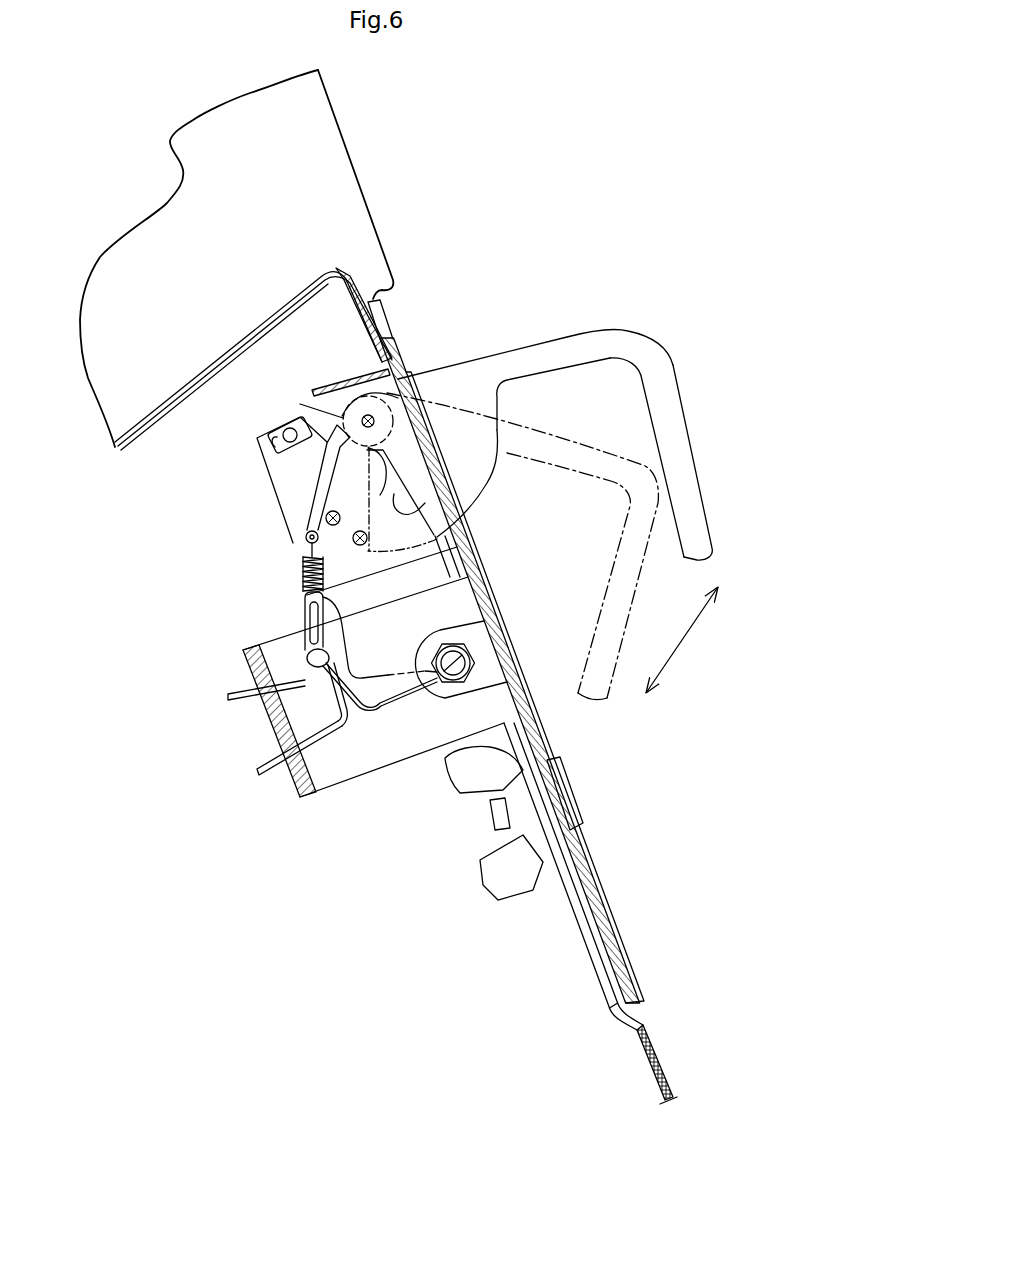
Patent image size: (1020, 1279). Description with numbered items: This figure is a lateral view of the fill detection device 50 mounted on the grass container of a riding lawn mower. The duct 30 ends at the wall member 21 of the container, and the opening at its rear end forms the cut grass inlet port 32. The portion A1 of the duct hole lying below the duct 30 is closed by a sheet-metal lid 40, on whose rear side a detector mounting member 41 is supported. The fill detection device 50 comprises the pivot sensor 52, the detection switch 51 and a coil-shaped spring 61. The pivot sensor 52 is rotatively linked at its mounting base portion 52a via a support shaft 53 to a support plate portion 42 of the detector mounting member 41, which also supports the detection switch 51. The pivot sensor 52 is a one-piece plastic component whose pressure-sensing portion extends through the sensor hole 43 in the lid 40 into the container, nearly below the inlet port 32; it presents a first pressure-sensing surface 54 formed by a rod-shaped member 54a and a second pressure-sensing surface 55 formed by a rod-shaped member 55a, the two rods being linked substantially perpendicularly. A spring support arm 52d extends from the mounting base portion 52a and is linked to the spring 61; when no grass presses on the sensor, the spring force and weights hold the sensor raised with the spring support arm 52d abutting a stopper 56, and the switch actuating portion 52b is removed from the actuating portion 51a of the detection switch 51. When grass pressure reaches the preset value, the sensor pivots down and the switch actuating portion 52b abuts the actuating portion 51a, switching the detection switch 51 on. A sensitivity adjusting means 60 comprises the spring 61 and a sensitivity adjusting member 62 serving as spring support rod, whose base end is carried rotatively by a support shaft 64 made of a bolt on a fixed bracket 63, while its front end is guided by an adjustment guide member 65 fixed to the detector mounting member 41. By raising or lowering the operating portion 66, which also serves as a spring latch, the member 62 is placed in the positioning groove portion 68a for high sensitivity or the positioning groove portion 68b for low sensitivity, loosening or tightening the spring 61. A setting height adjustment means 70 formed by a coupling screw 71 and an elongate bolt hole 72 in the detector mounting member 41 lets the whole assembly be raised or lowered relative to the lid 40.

The wall member 21 is at (657, 1047).
The duct 30 is at (152, 423).
The cut grass inlet port 32 is at (312, 200).
The lid 40 is at (607, 907).
The detector mounting member 41 is at (565, 898).
The support plate portion 42 is at (300, 545).
The sensor hole 43 is at (400, 362).
The fill detection device 50 is at (190, 502).
The detection switch 51 is at (280, 470).
The actuating portion 51a is at (385, 495).
The pivot sensor 52 is at (499, 462).
The mounting base portion 52a is at (353, 397).
The switch actuating portion 52b is at (420, 510).
The spring support arm 52d is at (323, 493).
The support shaft 53 is at (360, 420).
The first pressure-sensing surface 54 is at (558, 334).
The rod-shaped member 54a is at (513, 363).
The second pressure-sensing surface 55 is at (687, 414).
The rod-shaped member 55a is at (680, 453).
The stopper 56 is at (330, 505).
The sensitivity adjusting means 60 is at (375, 755).
The spring 61 is at (307, 610).
The sensitivity adjusting member 62 is at (318, 737).
The fixed bracket 63 is at (483, 682).
The support shaft 64 is at (445, 647).
The adjustment guide member 65 is at (293, 797).
The operating portion 66 is at (313, 630).
The positioning groove portion 68a is at (250, 682).
The positioning groove portion 68b is at (300, 748).
The setting height adjustment means 70 is at (487, 853).
The coupling screw 71 is at (463, 783).
The bolt hole 72 is at (562, 860).
The portion of the duct hole A1 is at (590, 943).